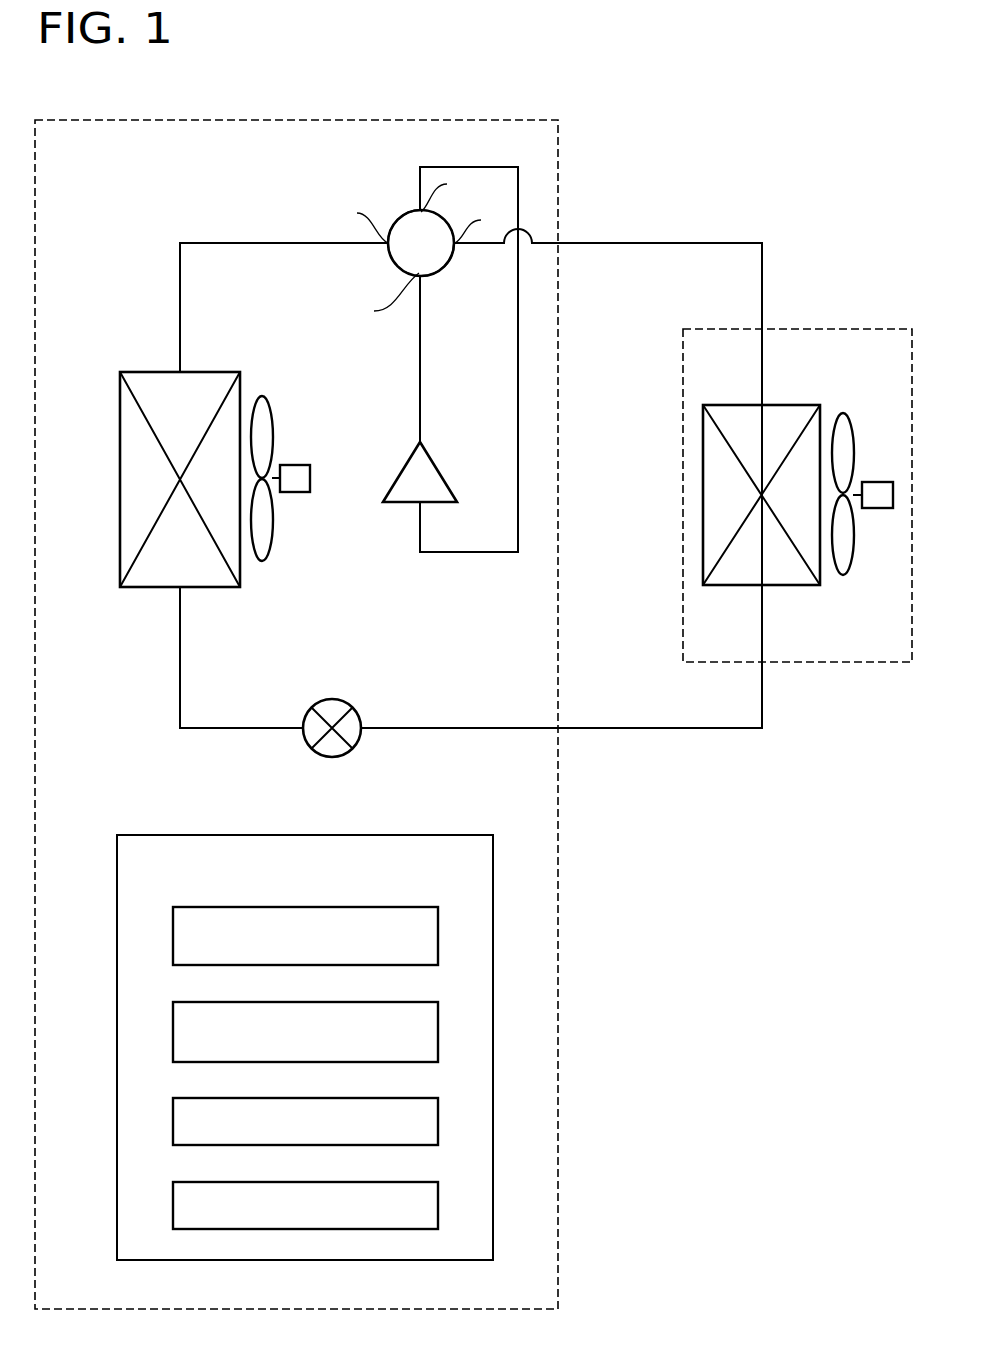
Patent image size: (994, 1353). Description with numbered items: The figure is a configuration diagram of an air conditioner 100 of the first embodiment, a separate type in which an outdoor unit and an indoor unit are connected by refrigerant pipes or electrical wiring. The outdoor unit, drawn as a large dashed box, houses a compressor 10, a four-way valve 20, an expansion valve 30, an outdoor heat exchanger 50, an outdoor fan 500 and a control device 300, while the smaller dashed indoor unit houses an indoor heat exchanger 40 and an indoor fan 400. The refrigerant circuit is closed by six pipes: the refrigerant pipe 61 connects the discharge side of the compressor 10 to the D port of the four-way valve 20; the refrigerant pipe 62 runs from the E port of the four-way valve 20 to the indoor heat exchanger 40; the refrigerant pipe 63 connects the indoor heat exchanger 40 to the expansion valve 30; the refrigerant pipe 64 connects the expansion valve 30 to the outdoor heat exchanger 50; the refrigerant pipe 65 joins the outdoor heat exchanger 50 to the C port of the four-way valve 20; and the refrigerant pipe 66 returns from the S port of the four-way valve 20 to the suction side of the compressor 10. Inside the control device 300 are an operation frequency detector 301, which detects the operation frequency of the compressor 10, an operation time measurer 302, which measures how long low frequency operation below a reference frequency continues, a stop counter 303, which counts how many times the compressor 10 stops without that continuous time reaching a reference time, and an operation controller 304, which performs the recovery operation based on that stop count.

The air conditioner 100 is at (518, 97).
The compressor 10 is at (438, 468).
The four-way valve 20 is at (446, 267).
The expansion valve 30 is at (341, 700).
The indoor heat exchanger 40 is at (792, 586).
The outdoor heat exchanger 50 is at (120, 545).
The refrigerant pipe 61 is at (420, 353).
The refrigerant pipe 62 is at (654, 243).
The refrigerant pipe 63 is at (496, 728).
The refrigerant pipe 64 is at (260, 728).
The refrigerant pipe 65 is at (180, 322).
The refrigerant pipe 66 is at (420, 186).
The control device 300 is at (430, 835).
The operation frequency detector 301 is at (398, 907).
The operation time measurer 302 is at (398, 1002).
The stop counter 303 is at (398, 1098).
The operation controller 304 is at (398, 1182).
The indoor fan 400 is at (876, 508).
The outdoor fan 500 is at (296, 492).